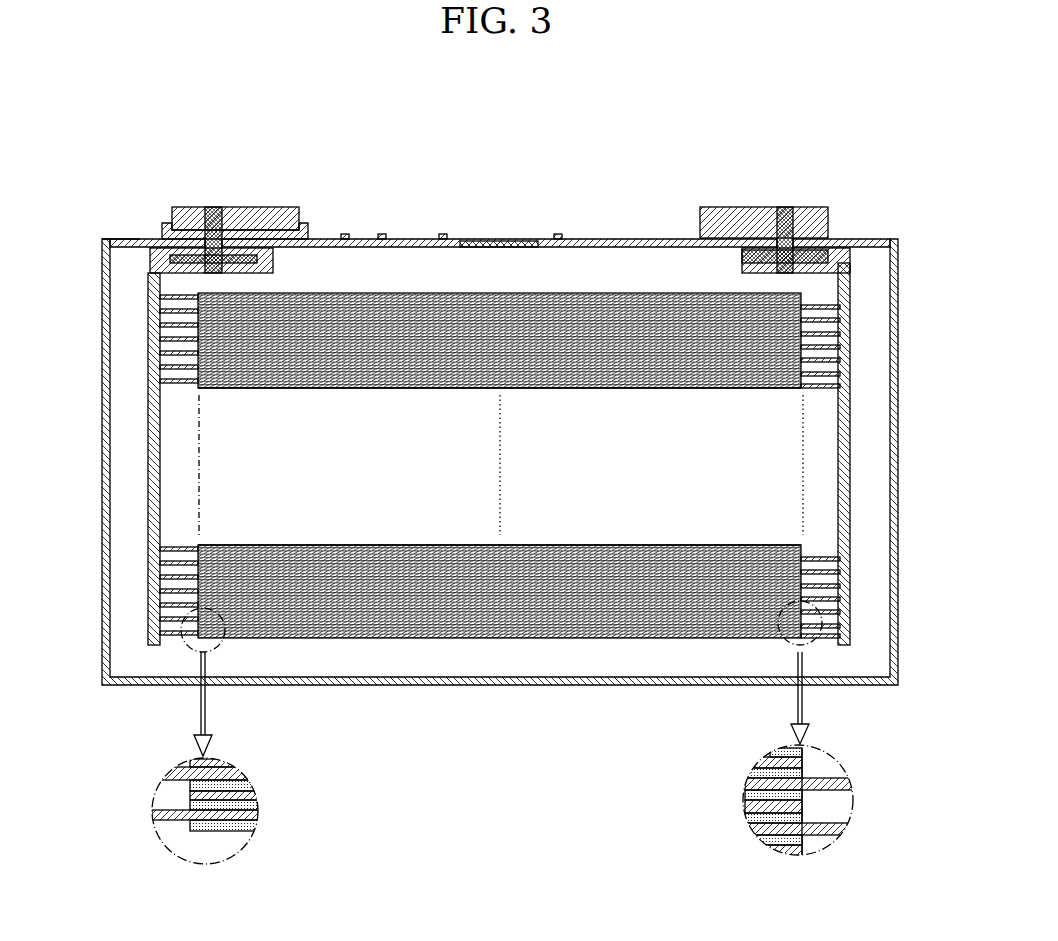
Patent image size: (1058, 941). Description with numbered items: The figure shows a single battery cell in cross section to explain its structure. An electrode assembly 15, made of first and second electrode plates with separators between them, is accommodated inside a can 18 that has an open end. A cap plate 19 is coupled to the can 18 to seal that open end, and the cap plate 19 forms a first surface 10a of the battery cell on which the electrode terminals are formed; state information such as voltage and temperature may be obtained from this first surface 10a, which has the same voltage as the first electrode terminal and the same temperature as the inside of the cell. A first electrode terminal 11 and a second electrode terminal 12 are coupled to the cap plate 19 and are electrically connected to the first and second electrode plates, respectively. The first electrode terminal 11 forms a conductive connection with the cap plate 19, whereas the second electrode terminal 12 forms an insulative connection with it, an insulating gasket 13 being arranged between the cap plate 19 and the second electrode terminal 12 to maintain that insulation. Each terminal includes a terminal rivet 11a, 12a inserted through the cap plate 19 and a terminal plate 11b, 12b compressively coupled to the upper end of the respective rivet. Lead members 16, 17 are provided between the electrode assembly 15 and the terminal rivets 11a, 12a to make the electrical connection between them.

The first surface 10a is at (618, 238).
The first electrode terminal 11 is at (778, 182).
The terminal rivet 11a is at (785, 203).
The terminal plate 11b is at (818, 207).
The second electrode terminal 12 is at (219, 182).
The terminal rivet 12a is at (212, 207).
The terminal plate 12b is at (183, 207).
The insulating gasket 13 is at (165, 226).
The electrode assembly 15 is at (397, 479).
The lead member 16 is at (850, 420).
The lead member 17 is at (148, 461).
The can 18 is at (898, 467).
The cap plate 19 is at (128, 240).